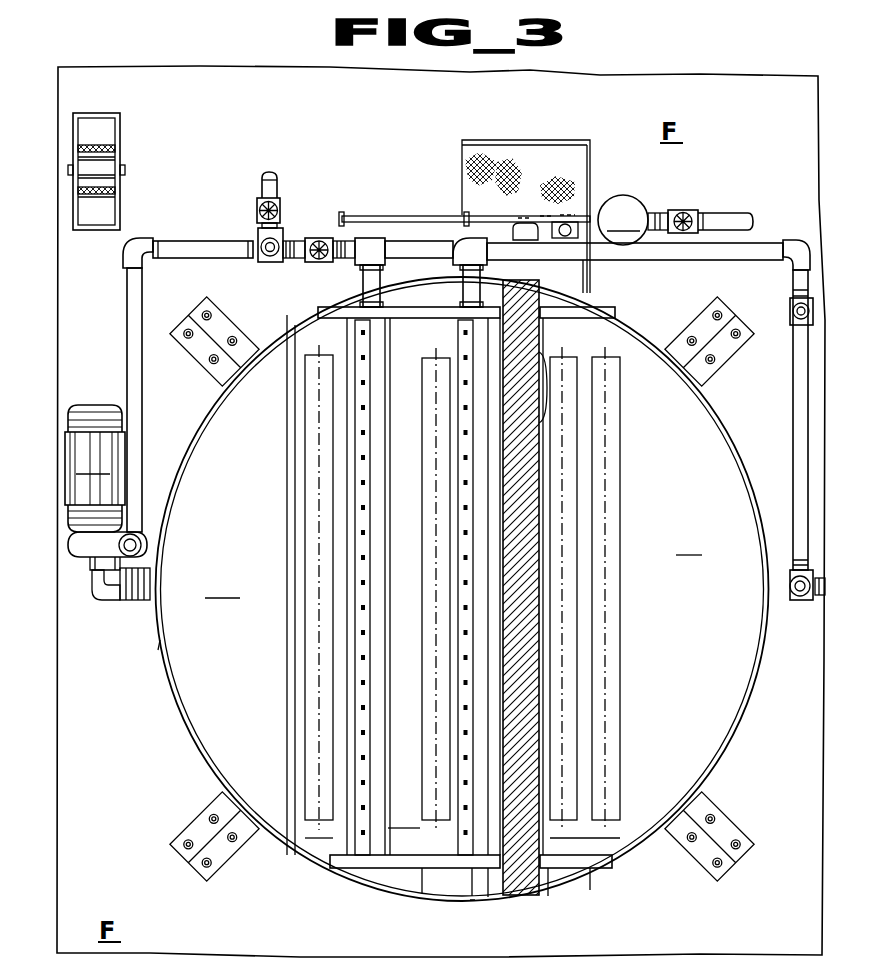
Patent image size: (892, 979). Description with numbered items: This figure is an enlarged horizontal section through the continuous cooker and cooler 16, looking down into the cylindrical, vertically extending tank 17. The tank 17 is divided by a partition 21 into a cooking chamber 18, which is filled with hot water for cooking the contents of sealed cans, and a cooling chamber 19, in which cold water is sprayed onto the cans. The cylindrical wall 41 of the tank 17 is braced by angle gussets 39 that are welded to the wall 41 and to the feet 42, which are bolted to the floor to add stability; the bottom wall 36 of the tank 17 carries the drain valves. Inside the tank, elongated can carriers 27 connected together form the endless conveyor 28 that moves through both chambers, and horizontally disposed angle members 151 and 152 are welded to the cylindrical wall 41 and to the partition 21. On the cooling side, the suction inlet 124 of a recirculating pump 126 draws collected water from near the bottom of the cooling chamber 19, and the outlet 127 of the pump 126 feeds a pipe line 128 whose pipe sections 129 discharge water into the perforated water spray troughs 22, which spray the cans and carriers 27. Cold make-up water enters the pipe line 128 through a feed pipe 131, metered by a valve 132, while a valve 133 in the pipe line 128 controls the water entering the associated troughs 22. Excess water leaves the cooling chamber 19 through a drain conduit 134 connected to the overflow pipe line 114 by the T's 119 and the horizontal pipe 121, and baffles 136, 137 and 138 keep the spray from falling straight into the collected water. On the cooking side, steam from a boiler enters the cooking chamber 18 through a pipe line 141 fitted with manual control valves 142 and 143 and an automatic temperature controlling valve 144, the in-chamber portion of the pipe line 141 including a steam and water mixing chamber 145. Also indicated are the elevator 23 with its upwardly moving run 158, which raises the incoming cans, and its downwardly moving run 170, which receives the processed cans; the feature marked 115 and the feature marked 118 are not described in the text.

The continuous cooker and cooler 16 is at (314, 900).
The tank 17 is at (170, 712).
The cooking chamber 18 is at (582, 840).
The cooling chamber 19 is at (322, 838).
The partition 21 is at (517, 883).
The water spray troughs 22 is at (462, 571).
The elevator 23 is at (105, 168).
The can carriers 27 is at (290, 632).
The endless conveyor 28 is at (326, 375).
The bottom wall 36 is at (688, 545).
The angle gussets 39 is at (217, 327).
The cylindrical wall 41 is at (158, 647).
The feet 42 is at (219, 306).
The overflow pipe line 114 is at (795, 588).
The valve handle 115 is at (823, 596).
The coupling 118 is at (792, 306).
The T's 119 is at (792, 341).
The horizontal pipe 121 is at (793, 390).
The suction inlet 124 is at (148, 600).
The recirculating pump 126 is at (95, 468).
The outlet 127 is at (150, 546).
The pipe line 128 is at (172, 251).
The pipe sections 129 is at (467, 287).
The feed pipe 131 is at (278, 178).
The valve 132 is at (279, 204).
The valve 133 is at (307, 258).
The drain conduit 134 is at (597, 252).
The baffle 136 is at (222, 588).
The baffle 137 is at (405, 818).
The baffle 138 is at (483, 885).
The pipe line 141 is at (719, 216).
The manual control valve 142 is at (556, 214).
The manual control valve 143 is at (678, 211).
The temperature controlling valve 144 is at (623, 220).
The steam and water mixing chamber 145 is at (545, 405).
The angle members 151 is at (327, 316).
The angle members 152 is at (358, 868).
The upwardly moving run 158 is at (105, 132).
The downwardly moving run 170 is at (105, 207).